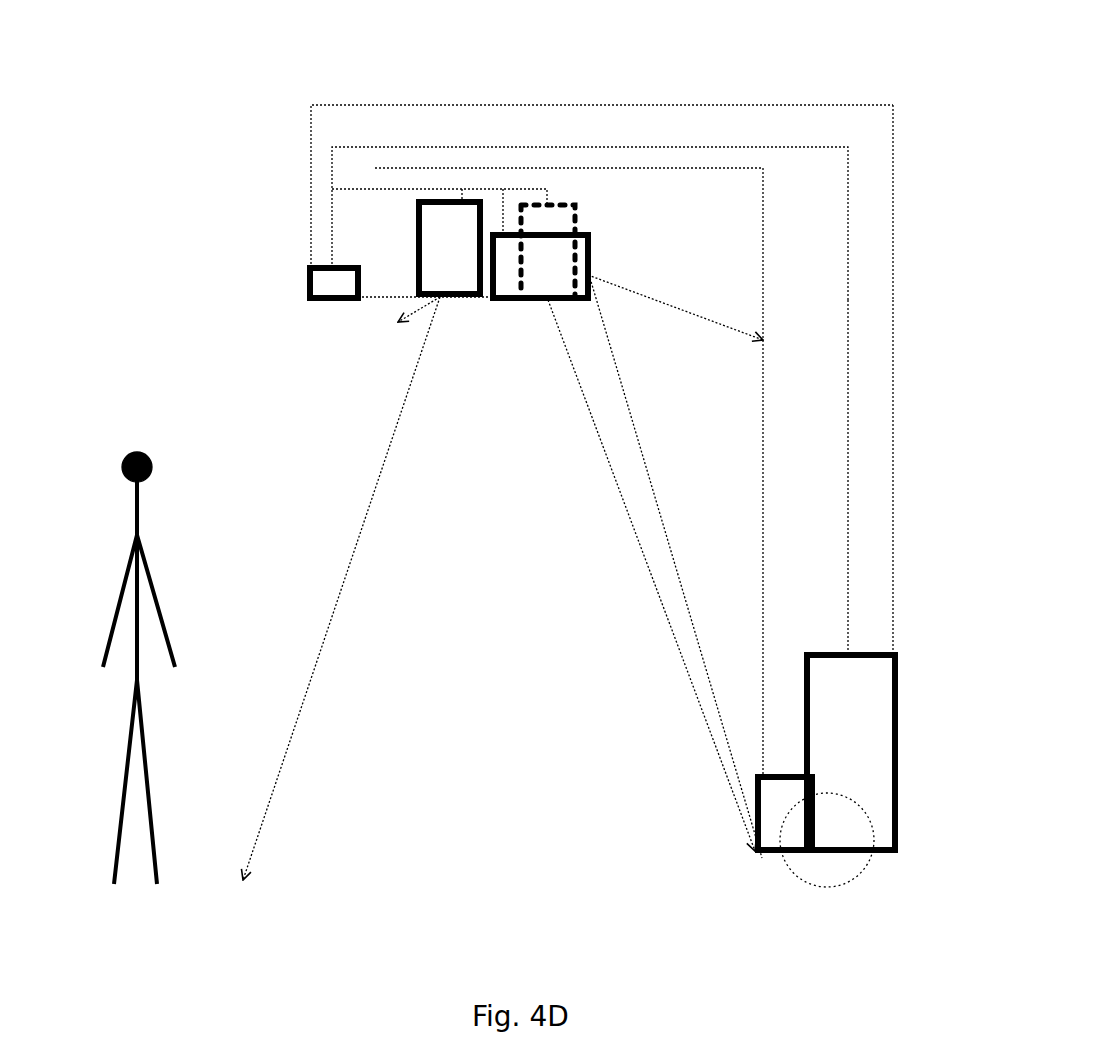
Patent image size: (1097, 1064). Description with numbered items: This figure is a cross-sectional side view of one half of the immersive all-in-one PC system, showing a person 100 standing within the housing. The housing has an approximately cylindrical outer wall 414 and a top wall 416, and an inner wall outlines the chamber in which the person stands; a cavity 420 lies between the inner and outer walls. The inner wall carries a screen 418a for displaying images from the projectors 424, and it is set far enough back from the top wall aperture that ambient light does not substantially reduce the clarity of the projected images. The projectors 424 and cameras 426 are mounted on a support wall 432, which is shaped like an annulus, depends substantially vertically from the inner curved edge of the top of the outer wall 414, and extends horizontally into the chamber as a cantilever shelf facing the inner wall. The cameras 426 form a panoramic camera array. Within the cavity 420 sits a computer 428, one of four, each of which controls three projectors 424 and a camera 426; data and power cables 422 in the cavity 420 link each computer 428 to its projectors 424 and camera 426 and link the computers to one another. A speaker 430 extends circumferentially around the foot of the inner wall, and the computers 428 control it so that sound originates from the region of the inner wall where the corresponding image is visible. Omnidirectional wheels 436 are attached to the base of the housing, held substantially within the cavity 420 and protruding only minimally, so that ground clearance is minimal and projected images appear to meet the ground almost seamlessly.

The user 100 is at (115, 562).
The outer wall 414 is at (896, 106).
The top wall 416 is at (641, 103).
The screen 418a is at (760, 481).
The cavity 420 is at (830, 451).
The data and power cables 422 is at (852, 236).
The projectors 424 is at (551, 227).
The cameras 426 is at (326, 285).
The computer 428 is at (880, 792).
The speaker 430 is at (781, 806).
The support wall 432 is at (386, 300).
The omnidirectional wheels 436 is at (812, 870).